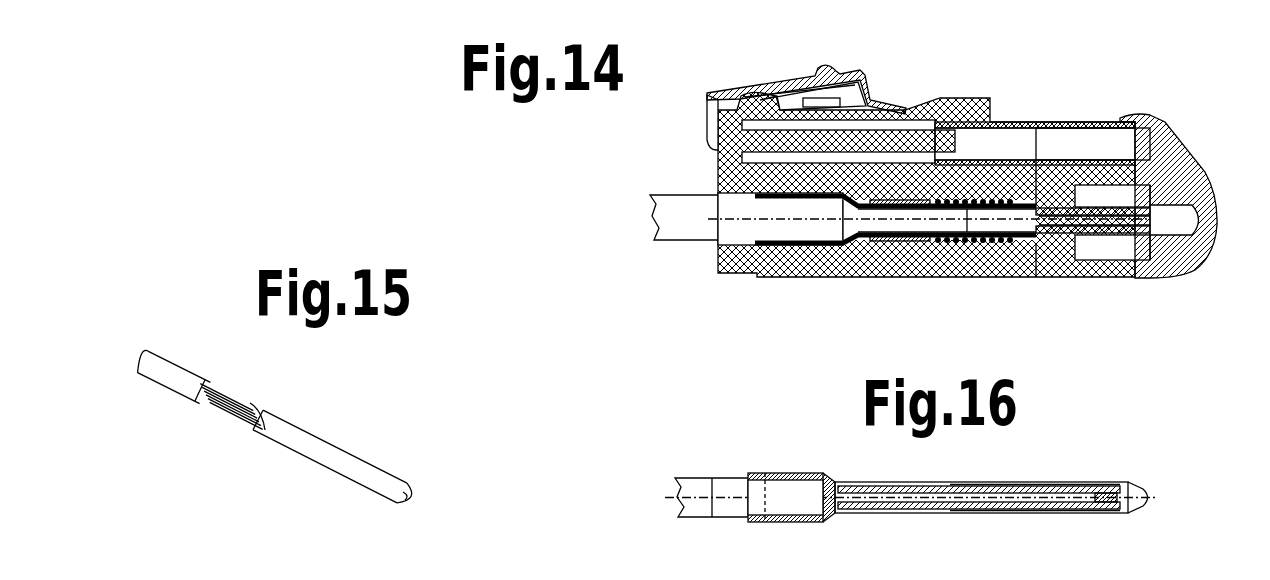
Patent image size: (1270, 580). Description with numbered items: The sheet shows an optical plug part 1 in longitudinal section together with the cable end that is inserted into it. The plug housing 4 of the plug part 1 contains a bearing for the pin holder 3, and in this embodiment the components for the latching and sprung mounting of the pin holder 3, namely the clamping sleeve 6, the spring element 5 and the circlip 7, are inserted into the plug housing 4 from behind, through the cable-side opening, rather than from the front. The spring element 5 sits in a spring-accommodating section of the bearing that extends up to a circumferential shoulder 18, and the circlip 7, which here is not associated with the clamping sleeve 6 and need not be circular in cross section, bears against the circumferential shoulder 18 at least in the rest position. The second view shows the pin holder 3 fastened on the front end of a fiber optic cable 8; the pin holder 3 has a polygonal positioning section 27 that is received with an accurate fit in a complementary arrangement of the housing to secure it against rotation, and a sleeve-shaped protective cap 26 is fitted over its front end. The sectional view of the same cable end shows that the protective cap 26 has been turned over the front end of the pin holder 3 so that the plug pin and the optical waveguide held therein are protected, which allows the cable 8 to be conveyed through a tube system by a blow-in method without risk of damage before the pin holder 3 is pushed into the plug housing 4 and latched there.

In FIG. 14, the plug part 1 is at (766, 47).
In FIG. 15, the pin holder 3 is at (336, 419).
In FIG. 16, the pin holder 3 is at (947, 468).
In FIG. 14, the plug housing 4 is at (888, 110).
In FIG. 14, the spring element 5 is at (996, 165).
In FIG. 14, the clamping sleeve 6 is at (878, 253).
In FIG. 14, the circlip 7 is at (1035, 165).
In FIG. 15, the fiber optic cable 8 is at (147, 373).
In FIG. 14, the circumferential shoulder 18 is at (1035, 277).
In FIG. 15, the protective cap 26 is at (388, 483).
In FIG. 16, the protective cap 26 is at (1132, 485).
In FIG. 15, the positioning section 27 is at (233, 427).